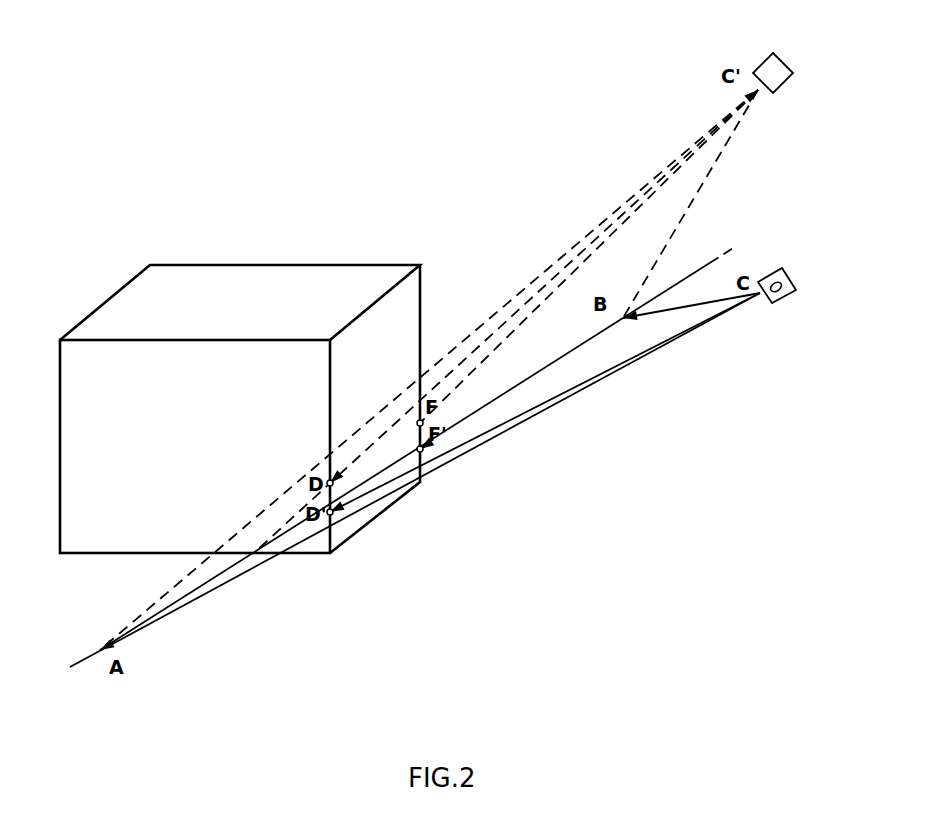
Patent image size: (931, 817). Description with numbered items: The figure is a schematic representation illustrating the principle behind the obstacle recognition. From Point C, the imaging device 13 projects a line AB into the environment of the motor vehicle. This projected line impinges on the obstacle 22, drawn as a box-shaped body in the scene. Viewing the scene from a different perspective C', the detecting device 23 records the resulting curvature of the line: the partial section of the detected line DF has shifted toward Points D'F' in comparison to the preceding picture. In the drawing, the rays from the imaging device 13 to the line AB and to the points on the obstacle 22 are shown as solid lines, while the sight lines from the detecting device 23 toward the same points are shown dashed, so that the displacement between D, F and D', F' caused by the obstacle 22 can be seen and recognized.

The obstacle 22 is at (240, 409).
The detecting device 23 is at (775, 56).
The imaging device 13 is at (788, 300).